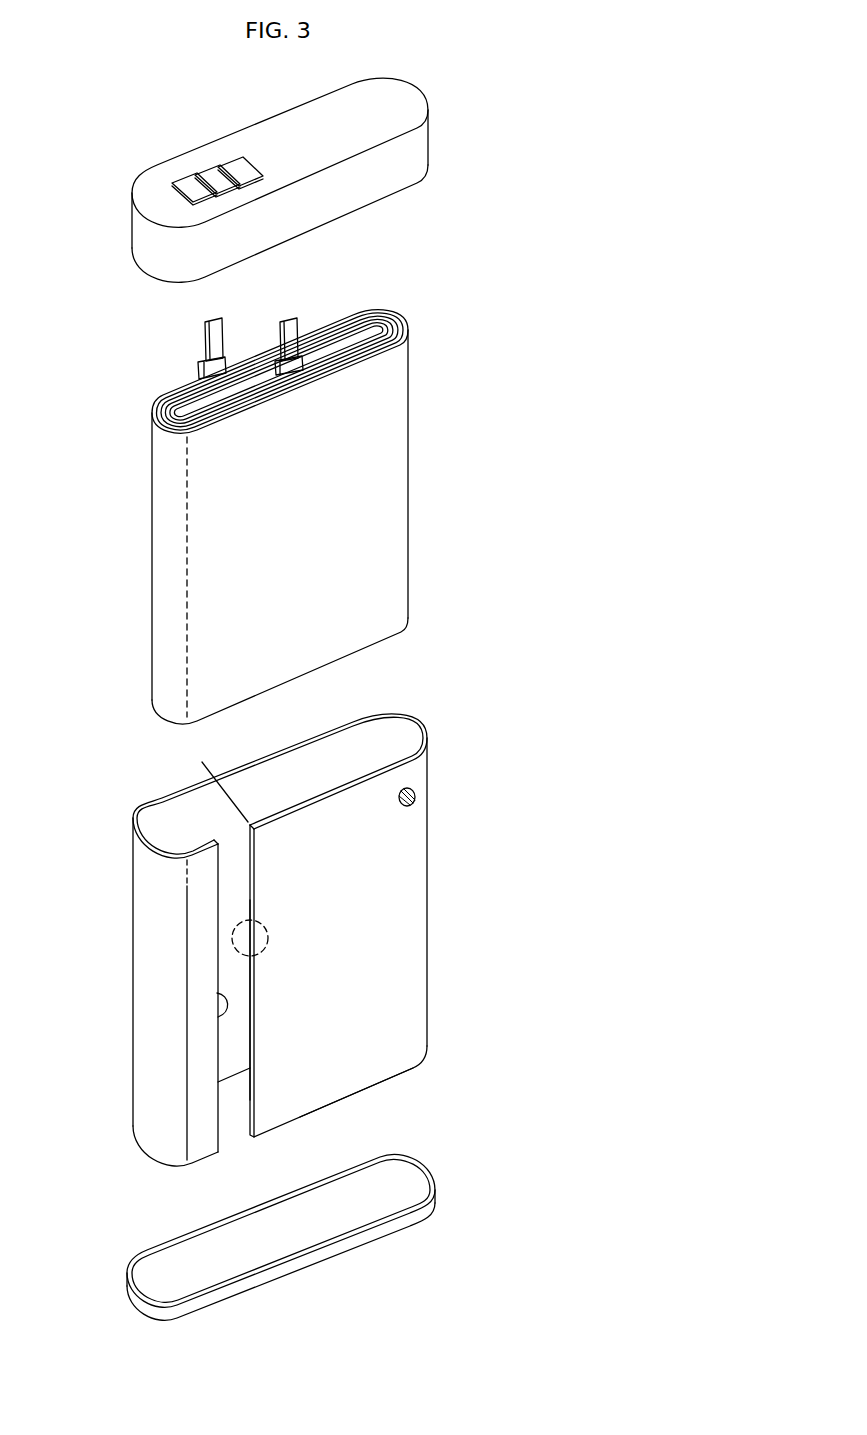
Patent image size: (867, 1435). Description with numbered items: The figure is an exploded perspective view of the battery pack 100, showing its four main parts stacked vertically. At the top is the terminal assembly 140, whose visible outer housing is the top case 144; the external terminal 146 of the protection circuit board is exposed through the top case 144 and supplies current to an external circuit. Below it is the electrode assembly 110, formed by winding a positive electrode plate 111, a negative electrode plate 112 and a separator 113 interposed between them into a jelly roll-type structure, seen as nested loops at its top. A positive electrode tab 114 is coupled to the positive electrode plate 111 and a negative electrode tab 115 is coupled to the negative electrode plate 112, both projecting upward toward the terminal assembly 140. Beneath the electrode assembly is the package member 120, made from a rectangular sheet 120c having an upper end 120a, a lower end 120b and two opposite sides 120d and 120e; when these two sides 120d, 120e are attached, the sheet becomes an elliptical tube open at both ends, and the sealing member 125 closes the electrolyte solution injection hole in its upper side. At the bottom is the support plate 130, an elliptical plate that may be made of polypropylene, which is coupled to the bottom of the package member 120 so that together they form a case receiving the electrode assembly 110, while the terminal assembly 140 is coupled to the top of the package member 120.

The battery pack 100 is at (110, 84).
The electrode assembly 110 is at (416, 467).
The positive electrode plate 111 is at (367, 312).
The negative electrode plate 112 is at (396, 331).
The separator 113 is at (393, 316).
The positive electrode tab 114 is at (210, 337).
The negative electrode tab 115 is at (289, 325).
The package member 120 is at (431, 933).
The upper end 120a is at (424, 728).
The lower end 120b is at (415, 1068).
The rectangular sheet 120c is at (413, 864).
The side of the sheet 120d is at (252, 1037).
The side of the sheet 120e is at (212, 992).
The sealing member 125 is at (416, 795).
The support plate 130 is at (436, 1182).
The terminal assembly 140 is at (433, 135).
The top case 144 is at (284, 128).
The external terminal 146 is at (207, 172).